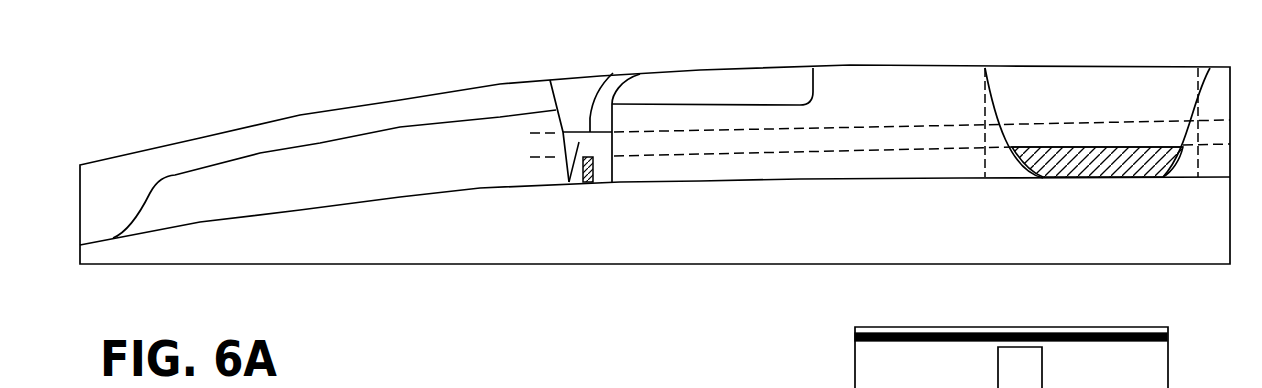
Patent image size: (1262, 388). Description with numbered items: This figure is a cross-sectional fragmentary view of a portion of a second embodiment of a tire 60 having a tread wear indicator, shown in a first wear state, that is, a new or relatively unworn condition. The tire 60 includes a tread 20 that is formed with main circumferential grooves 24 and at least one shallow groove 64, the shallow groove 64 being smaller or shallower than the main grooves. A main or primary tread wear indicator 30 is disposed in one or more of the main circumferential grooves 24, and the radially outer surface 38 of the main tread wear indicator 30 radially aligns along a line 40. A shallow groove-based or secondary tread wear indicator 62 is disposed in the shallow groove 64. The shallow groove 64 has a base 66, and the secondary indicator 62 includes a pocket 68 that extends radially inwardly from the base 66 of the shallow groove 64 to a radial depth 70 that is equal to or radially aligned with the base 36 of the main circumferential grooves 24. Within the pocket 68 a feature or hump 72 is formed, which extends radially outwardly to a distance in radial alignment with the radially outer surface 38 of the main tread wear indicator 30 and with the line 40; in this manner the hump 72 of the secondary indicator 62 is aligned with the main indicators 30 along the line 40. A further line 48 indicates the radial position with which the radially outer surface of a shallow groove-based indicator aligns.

The tread 20 is at (205, 136).
The main circumferential grooves 24 is at (1190, 112).
The main tread wear indicator 30 is at (1088, 157).
The base 36 is at (1090, 160).
The radially outer surface 38 is at (1122, 145).
The line 40 is at (750, 153).
The line 48 is at (652, 133).
The tire 60 is at (432, 267).
The shallow groove-based tread wear indicator 62 is at (561, 166).
The shallow groove 64 is at (558, 113).
The base 66 is at (613, 73).
The pocket 68 is at (569, 185).
The radial depth 70 is at (596, 182).
The hump 72 is at (592, 160).